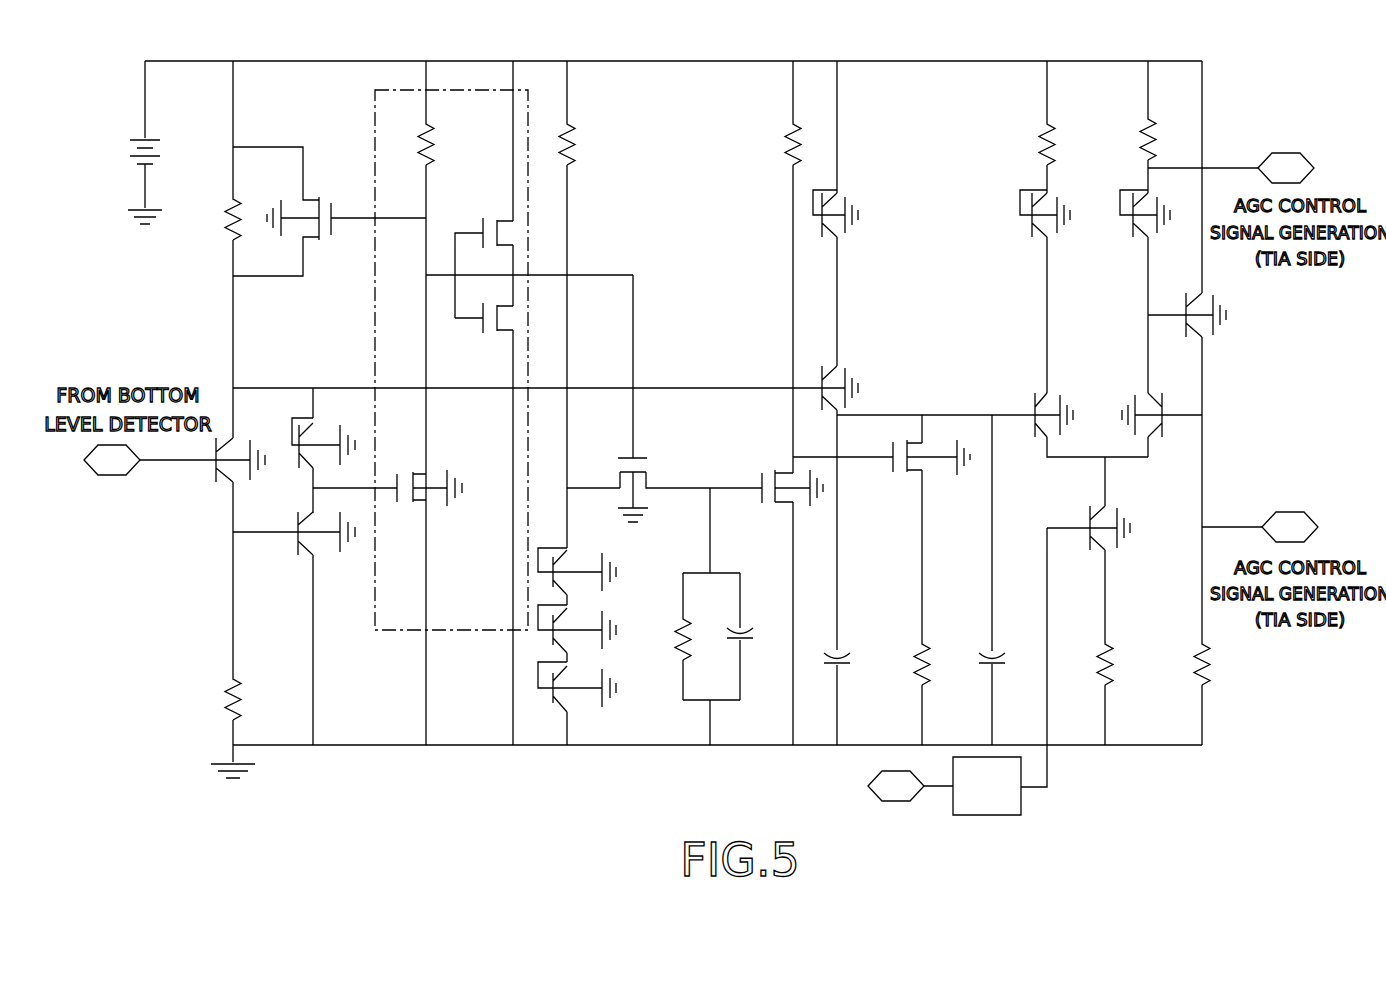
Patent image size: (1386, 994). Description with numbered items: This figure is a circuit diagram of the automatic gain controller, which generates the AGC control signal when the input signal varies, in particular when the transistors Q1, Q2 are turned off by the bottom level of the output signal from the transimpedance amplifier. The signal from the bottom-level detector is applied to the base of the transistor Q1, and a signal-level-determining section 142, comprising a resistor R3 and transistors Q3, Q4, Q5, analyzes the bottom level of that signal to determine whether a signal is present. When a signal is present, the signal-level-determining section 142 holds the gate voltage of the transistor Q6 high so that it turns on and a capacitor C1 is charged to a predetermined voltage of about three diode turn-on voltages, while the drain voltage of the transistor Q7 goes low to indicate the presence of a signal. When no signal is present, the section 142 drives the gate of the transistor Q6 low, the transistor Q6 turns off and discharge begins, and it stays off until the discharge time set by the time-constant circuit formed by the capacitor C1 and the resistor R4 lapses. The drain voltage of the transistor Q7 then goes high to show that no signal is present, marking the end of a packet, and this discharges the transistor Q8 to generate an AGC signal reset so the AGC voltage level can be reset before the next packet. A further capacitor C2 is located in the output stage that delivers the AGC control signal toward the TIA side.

The transistor Q1 is at (224, 466).
The transistor Q2 is at (294, 628).
The transistor Q3 is at (387, 502).
The transistor Q4 is at (480, 262).
The transistor Q5 is at (480, 325).
The transistor Q6 is at (664, 483).
The transistor Q7 is at (786, 501).
The transistor Q8 is at (881, 527).
The resistor R3 is at (444, 142).
The resistor R4 is at (664, 636).
The capacitor C1 is at (756, 636).
The capacitor C2 is at (1009, 580).
The signal-level-determining section 142 is at (467, 630).